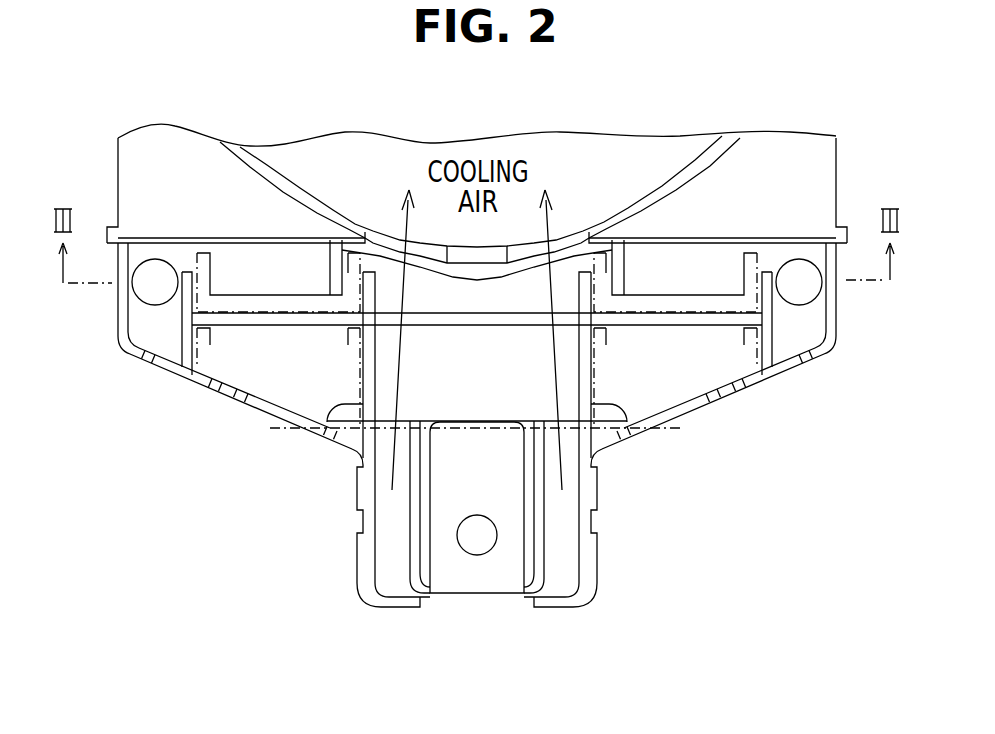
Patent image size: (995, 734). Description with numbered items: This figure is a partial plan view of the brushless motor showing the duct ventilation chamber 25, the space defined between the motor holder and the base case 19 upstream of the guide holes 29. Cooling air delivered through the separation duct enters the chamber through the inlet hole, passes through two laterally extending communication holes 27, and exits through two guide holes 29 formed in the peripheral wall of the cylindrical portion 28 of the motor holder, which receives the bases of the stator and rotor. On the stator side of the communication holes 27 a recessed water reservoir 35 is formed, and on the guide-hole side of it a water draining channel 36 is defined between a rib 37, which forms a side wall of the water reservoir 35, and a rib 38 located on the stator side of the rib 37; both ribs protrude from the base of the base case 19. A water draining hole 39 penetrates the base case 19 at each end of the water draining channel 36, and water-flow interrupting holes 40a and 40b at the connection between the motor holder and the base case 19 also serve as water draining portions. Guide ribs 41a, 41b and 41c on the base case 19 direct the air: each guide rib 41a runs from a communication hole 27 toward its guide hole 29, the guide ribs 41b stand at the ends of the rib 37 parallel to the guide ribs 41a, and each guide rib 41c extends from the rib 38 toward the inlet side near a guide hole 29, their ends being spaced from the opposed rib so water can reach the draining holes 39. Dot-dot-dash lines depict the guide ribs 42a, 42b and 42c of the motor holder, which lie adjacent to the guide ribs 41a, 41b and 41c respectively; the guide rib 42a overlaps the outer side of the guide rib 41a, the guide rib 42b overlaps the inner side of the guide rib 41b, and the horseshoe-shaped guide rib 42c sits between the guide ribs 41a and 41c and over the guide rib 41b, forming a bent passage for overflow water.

The base case 19 is at (838, 338).
The duct ventilation chamber 25 is at (575, 448).
The communication holes 27 is at (570, 535).
The cylindrical portion 28 is at (672, 184).
The guide holes 29 is at (581, 230).
The water reservoir 35 is at (480, 398).
The water draining channel 36 is at (432, 302).
The rib 37 is at (467, 320).
The rib 38 is at (697, 240).
The water draining hole 39 is at (810, 298).
The water-flow interrupting hole 40a is at (710, 400).
The water-flow interrupting hole 40b is at (800, 358).
The guide rib 41a is at (623, 433).
The guide rib 41b is at (774, 313).
The guide rib 41c is at (625, 273).
The guide rib 42a is at (610, 340).
The guide rib 42b is at (740, 357).
The guide rib 42c is at (767, 258).